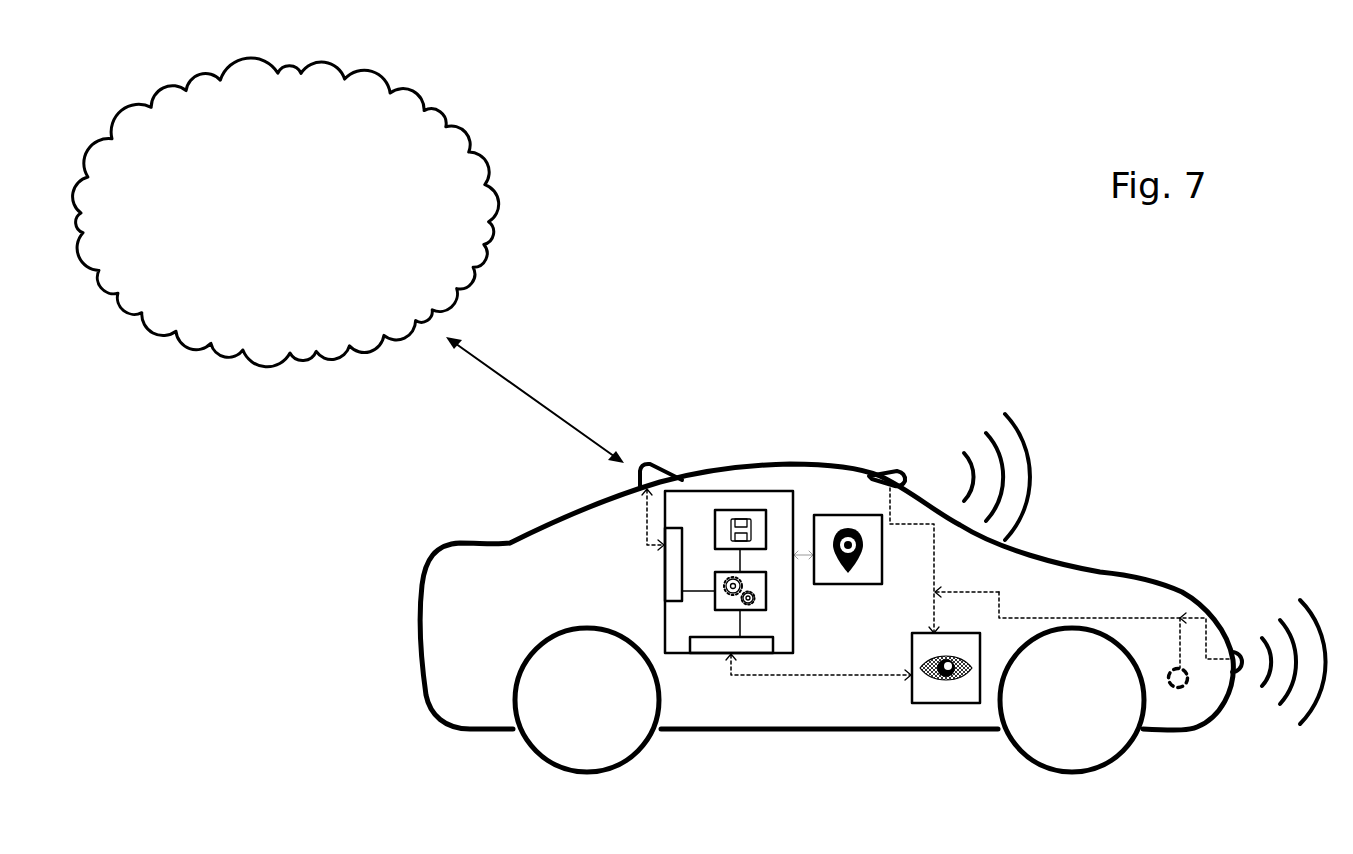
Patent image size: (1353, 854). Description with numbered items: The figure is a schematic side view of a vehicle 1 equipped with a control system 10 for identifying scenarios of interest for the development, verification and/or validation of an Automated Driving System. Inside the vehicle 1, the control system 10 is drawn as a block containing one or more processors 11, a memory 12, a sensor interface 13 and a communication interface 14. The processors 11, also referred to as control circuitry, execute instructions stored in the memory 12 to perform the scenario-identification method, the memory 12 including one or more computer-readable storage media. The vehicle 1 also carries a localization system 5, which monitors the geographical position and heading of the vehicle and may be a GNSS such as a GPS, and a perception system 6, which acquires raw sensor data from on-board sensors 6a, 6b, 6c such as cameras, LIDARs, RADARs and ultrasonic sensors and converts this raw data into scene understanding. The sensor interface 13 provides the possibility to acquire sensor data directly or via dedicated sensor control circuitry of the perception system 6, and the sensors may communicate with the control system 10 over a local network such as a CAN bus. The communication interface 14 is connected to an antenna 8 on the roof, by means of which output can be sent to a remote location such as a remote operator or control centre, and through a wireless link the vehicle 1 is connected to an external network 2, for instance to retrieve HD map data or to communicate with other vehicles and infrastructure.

The vehicle 1 is at (441, 724).
The external network 2 is at (433, 100).
The localization system 5 is at (832, 515).
The perception system 6 is at (960, 704).
The on-board sensor 6a is at (1183, 687).
The on-board sensor 6b is at (1238, 650).
The on-board sensor 6c is at (897, 470).
The antenna 8 is at (650, 465).
The control system 10 is at (720, 490).
The processor 11 is at (766, 597).
The memory 12 is at (740, 510).
The sensor interface 13 is at (715, 653).
The communication interface 14 is at (668, 578).